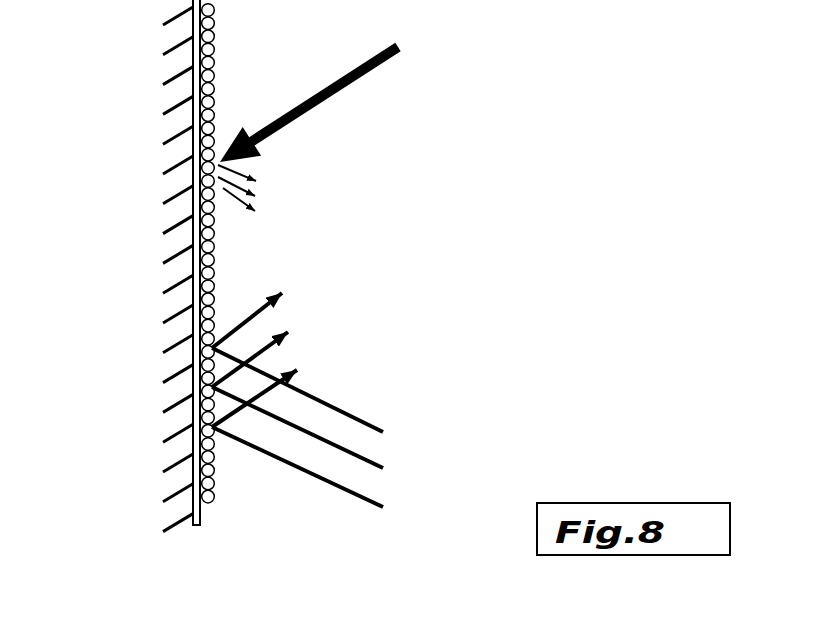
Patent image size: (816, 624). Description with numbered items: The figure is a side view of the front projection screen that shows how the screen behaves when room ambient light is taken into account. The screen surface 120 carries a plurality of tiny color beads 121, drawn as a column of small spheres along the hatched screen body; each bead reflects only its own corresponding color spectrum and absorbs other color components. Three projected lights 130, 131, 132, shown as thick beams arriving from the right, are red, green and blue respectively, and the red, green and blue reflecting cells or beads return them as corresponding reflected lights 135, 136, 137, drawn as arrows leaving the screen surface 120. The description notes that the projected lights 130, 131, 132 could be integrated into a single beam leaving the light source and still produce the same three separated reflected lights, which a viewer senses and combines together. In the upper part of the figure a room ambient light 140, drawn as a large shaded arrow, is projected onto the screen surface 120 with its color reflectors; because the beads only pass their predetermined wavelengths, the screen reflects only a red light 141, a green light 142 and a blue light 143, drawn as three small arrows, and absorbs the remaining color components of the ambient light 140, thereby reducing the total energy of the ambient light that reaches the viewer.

The screen surface 120 is at (191, 206).
The color beads 121 is at (221, 474).
The projected light 130 is at (384, 421).
The projected light 131 is at (385, 457).
The projected light 132 is at (386, 493).
The reflected light 135 is at (289, 293).
The reflected light 136 is at (299, 329).
The reflected light 137 is at (302, 368).
The room ambient light 140 is at (369, 81).
The red light 141 is at (271, 197).
The green light 142 is at (236, 186).
The blue light 143 is at (239, 199).